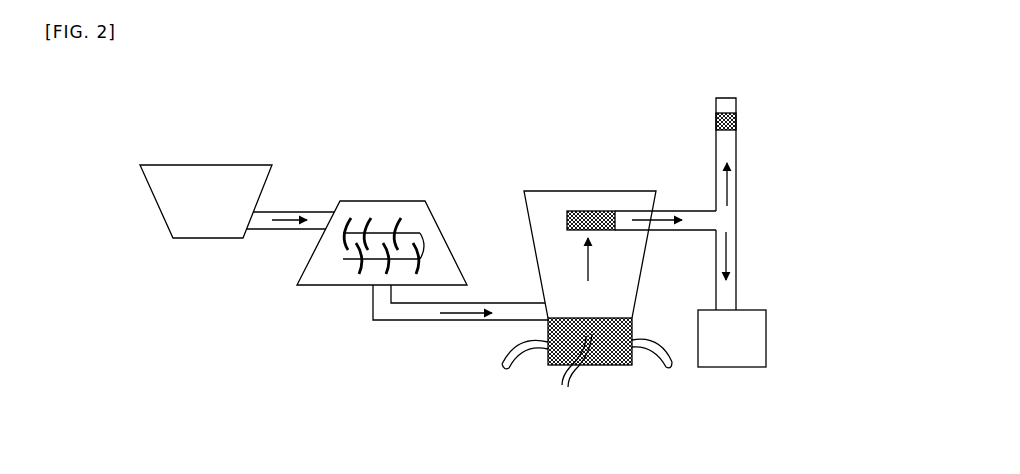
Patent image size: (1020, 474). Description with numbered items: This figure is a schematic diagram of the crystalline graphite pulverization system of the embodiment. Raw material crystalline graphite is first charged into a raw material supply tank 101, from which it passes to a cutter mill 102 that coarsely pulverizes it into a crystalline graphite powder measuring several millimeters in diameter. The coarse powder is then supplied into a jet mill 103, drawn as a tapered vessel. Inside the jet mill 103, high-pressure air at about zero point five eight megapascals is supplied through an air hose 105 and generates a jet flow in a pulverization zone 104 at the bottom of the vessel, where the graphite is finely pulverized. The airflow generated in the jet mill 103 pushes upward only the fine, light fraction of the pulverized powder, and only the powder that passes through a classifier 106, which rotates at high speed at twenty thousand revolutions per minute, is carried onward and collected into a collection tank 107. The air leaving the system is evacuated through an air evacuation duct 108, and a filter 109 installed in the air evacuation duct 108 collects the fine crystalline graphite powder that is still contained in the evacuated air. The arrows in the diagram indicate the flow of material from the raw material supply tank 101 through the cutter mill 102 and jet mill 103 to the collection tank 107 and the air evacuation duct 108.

The raw material supply tank 101 is at (170, 175).
The cutter mill 102 is at (370, 202).
The jet mill 103 is at (550, 192).
The pulverization zone 104 is at (568, 337).
The air hose 105 is at (568, 390).
The classifier 106 is at (602, 212).
The collection tank 107 is at (725, 357).
The air evacuation duct 108 is at (717, 98).
The filter 109 is at (717, 122).